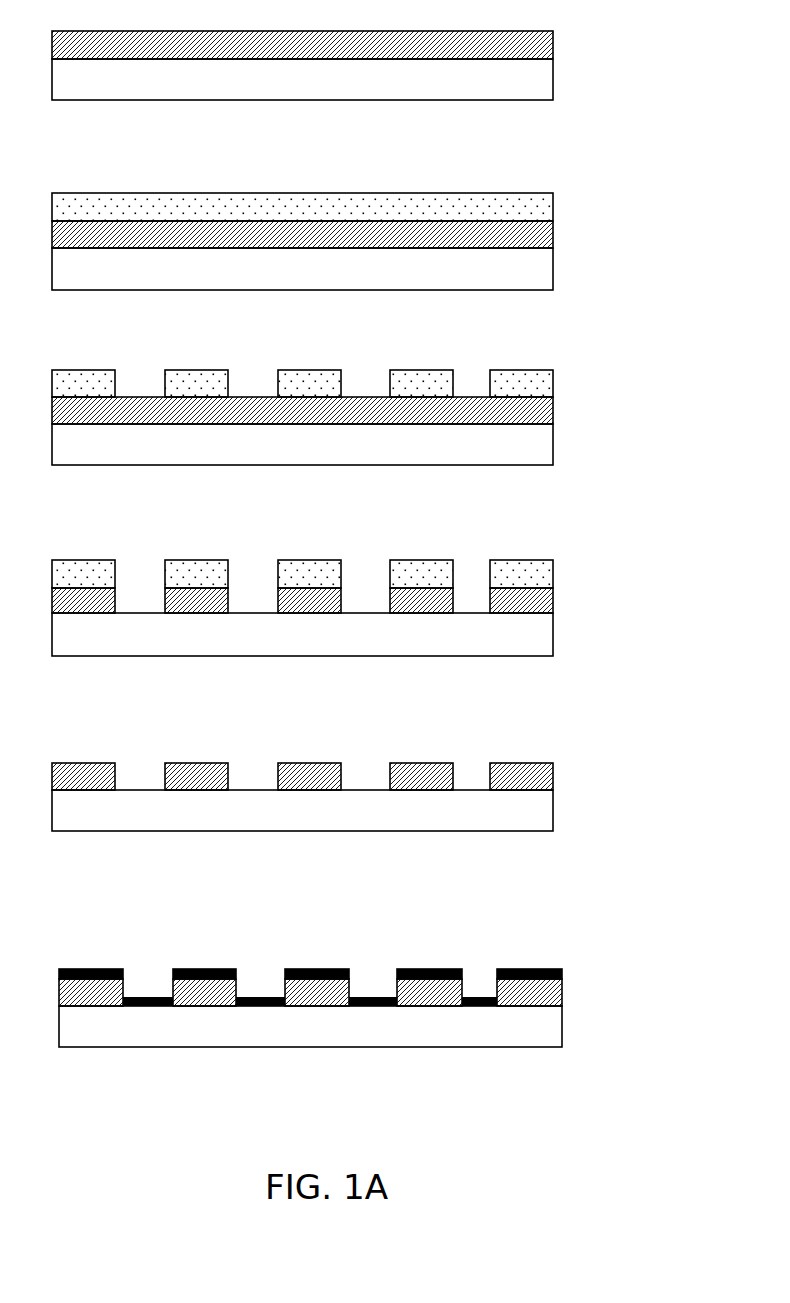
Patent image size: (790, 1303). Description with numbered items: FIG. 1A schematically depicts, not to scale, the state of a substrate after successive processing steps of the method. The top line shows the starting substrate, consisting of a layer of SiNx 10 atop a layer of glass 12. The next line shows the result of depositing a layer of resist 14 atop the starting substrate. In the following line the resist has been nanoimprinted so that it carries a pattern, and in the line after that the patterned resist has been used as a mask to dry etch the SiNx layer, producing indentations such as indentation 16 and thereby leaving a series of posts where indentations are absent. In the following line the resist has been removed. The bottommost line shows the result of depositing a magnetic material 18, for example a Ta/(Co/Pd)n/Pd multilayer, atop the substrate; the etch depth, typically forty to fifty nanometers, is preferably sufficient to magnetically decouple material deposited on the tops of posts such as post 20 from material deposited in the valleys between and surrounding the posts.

The layer of SiNx 10 is at (565, 48).
The layer of glass 12 is at (565, 83).
The layer of resist 14 is at (565, 205).
The indentation 16 is at (465, 600).
The magnetic material 18 is at (573, 977).
The post 20 is at (298, 950).